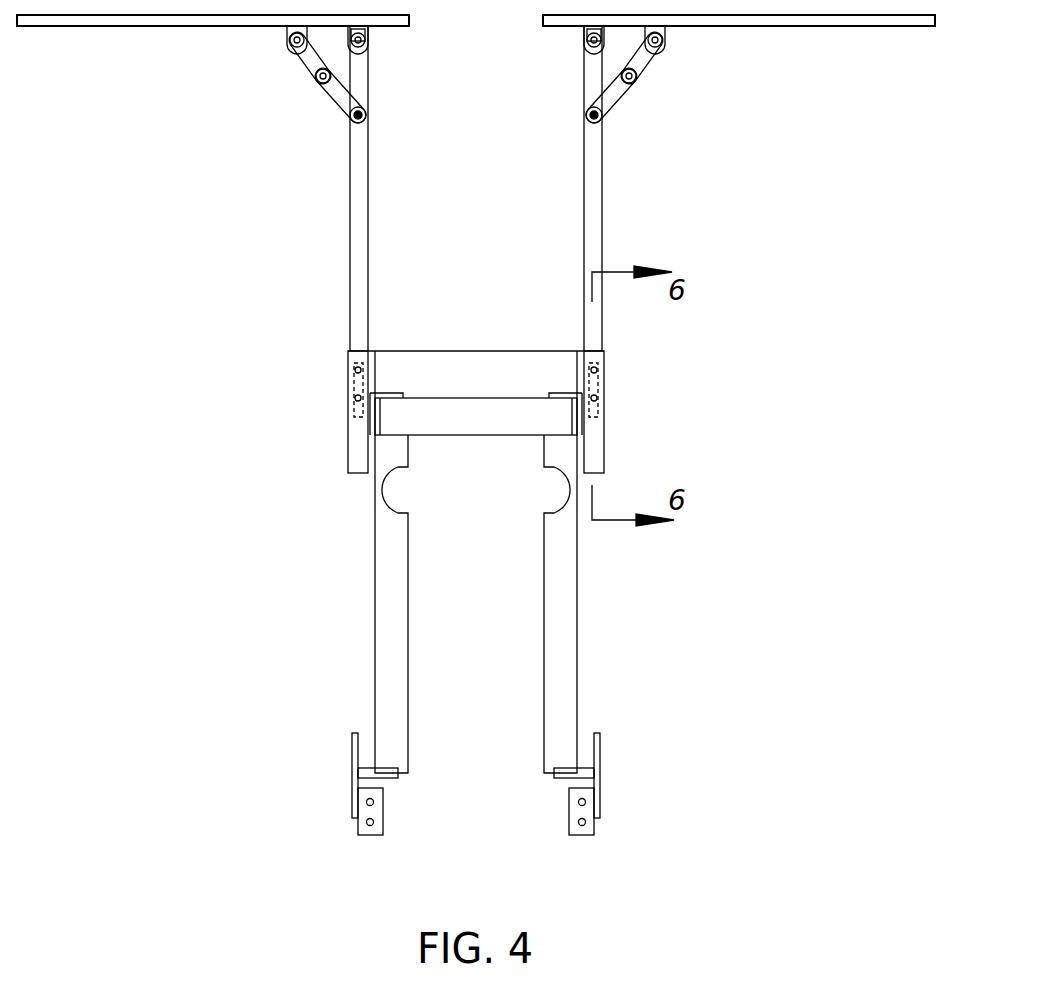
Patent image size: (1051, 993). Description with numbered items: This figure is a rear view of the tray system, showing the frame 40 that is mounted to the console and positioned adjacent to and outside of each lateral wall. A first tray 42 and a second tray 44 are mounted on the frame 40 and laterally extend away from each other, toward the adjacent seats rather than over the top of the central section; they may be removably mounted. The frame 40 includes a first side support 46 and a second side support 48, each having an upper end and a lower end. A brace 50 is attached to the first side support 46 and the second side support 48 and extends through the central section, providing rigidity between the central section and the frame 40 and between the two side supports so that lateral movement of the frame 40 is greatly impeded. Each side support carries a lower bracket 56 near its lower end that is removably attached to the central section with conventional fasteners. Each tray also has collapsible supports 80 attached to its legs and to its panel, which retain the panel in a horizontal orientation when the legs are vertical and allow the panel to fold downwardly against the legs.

The frame 40 is at (493, 623).
The first tray 42 is at (303, 135).
The second tray 44 is at (649, 135).
The first side support 46 is at (375, 507).
The second side support 48 is at (577, 561).
The brace 50 is at (540, 413).
The lower bracket 56 is at (362, 835).
The supports 80 is at (315, 82).